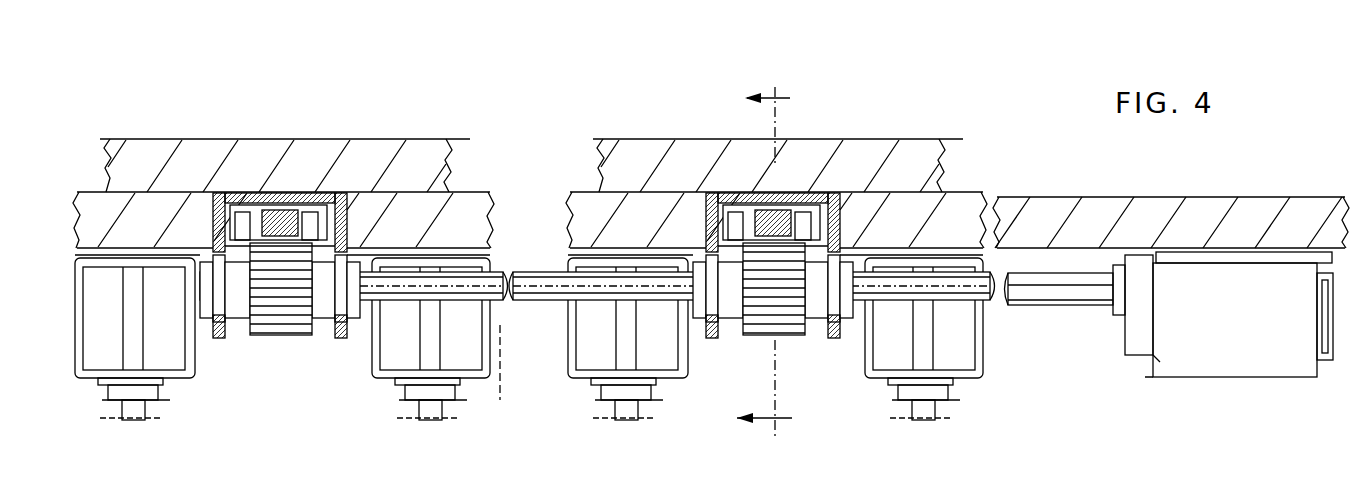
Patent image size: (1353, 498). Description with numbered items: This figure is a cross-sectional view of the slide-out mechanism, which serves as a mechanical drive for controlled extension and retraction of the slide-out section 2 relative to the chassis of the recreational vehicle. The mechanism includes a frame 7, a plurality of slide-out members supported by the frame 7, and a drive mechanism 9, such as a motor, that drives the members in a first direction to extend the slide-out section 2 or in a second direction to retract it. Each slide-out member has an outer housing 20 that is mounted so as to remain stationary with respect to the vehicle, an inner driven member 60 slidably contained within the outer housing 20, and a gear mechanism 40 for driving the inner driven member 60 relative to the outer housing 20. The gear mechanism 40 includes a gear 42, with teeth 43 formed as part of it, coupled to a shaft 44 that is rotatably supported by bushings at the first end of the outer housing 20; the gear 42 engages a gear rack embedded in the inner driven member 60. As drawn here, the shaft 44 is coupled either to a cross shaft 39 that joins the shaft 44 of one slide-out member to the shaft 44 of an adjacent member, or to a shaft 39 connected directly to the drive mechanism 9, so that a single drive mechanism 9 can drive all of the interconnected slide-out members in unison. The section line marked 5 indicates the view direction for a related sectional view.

The slide-out section 2 is at (362, 168).
The section line 5 is at (780, 261).
The frame 7 is at (1028, 217).
The drive mechanism 9 is at (1192, 348).
The outer housing 20 is at (228, 197).
The cross shaft 39 is at (523, 303).
The gear mechanism 40 is at (733, 340).
The gear 42 is at (280, 318).
The teeth 43 is at (800, 333).
The shaft 44 is at (883, 283).
The inner driven member 60 is at (260, 208).